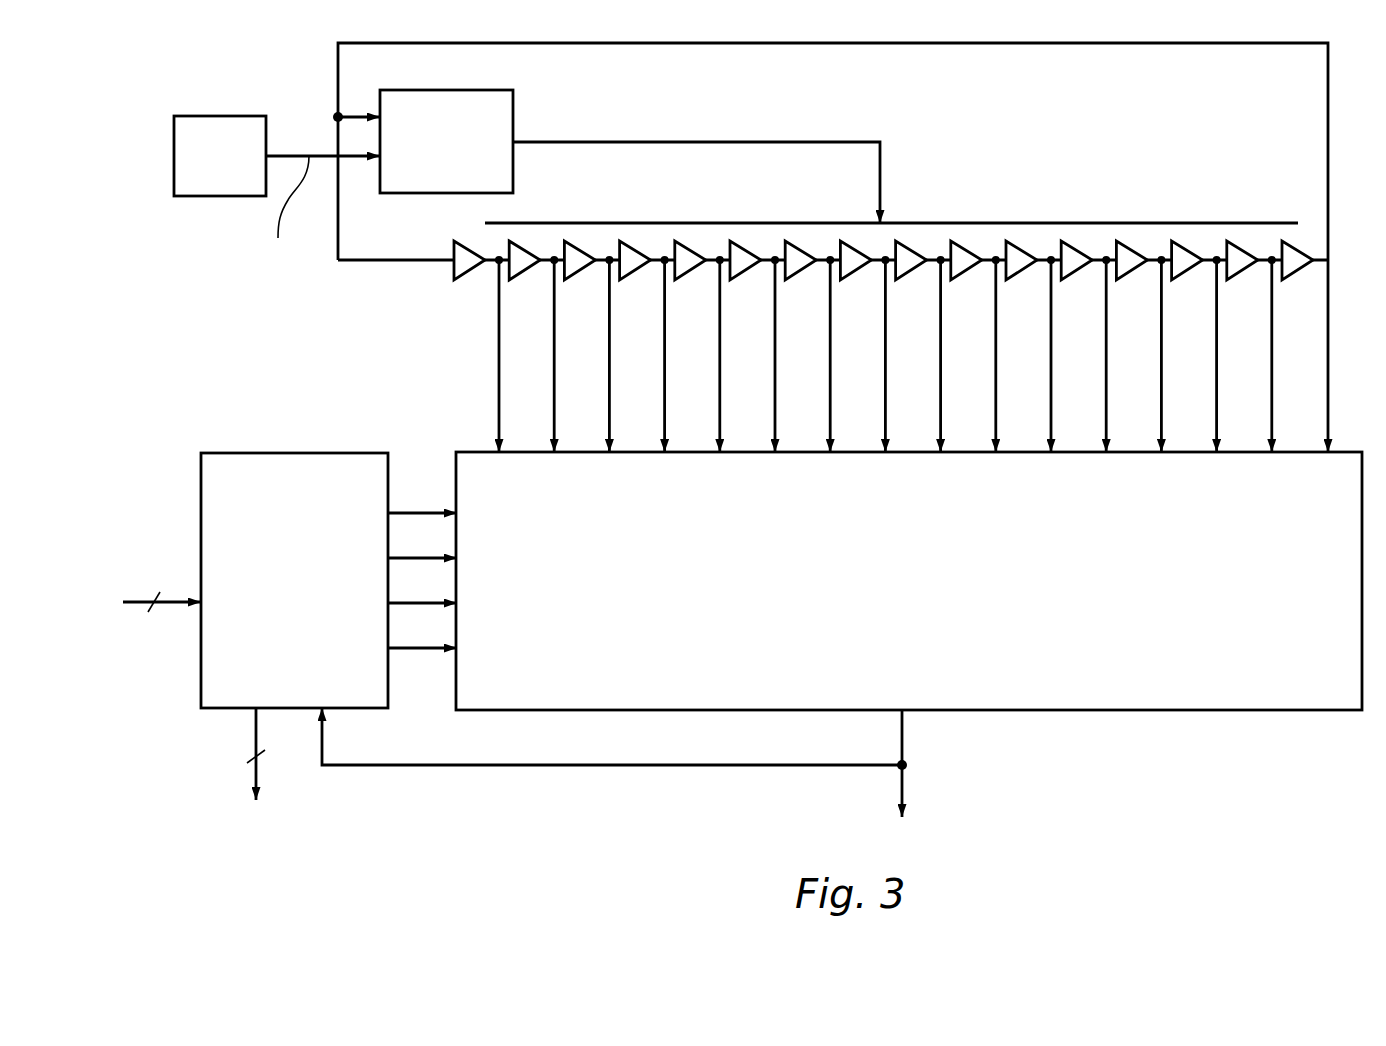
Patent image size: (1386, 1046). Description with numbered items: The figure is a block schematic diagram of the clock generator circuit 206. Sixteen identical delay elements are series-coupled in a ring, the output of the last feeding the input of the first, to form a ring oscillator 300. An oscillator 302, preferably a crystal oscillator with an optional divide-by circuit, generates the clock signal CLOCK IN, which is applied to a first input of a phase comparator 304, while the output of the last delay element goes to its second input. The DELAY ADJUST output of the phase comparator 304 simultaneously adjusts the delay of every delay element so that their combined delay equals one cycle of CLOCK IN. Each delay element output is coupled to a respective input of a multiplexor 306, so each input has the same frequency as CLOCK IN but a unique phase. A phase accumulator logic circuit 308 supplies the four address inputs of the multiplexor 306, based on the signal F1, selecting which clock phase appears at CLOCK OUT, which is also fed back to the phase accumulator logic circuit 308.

The clock generator circuit 206 is at (1124, 754).
The ring oscillator 300 is at (985, 43).
The oscillator 302 is at (277, 203).
The phase comparator 304 is at (446, 141).
The multiplexor 306 is at (842, 648).
The phase accumulator logic circuit 308 is at (290, 644).